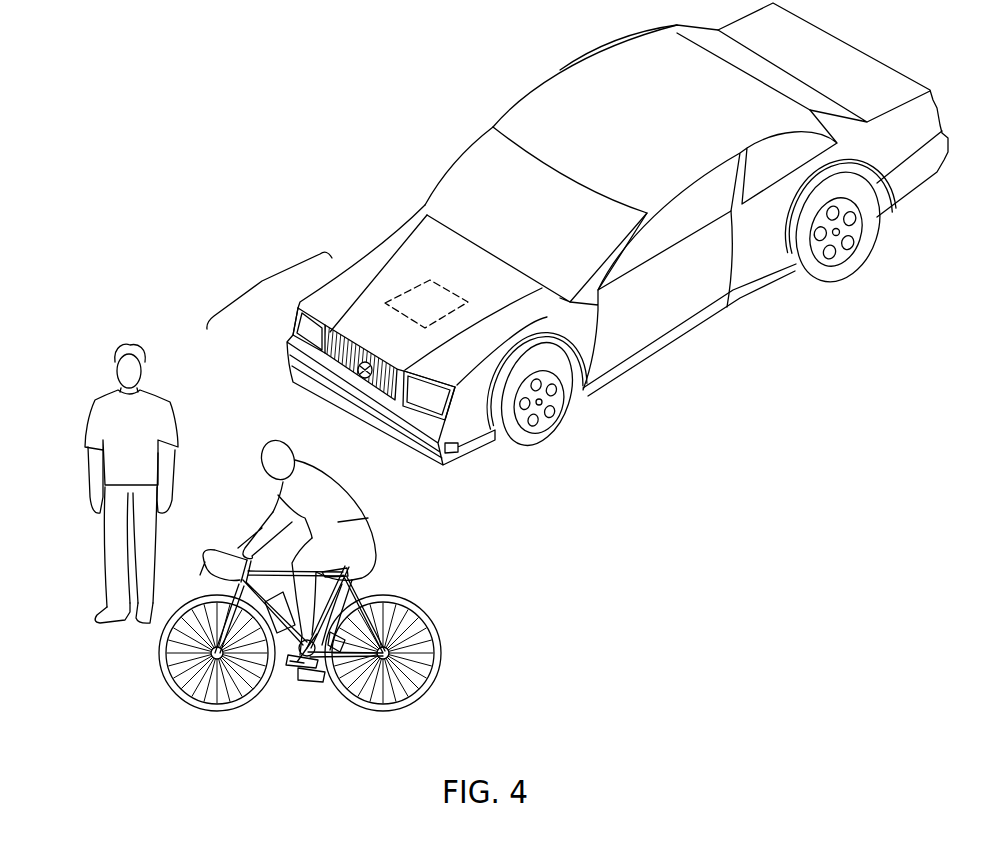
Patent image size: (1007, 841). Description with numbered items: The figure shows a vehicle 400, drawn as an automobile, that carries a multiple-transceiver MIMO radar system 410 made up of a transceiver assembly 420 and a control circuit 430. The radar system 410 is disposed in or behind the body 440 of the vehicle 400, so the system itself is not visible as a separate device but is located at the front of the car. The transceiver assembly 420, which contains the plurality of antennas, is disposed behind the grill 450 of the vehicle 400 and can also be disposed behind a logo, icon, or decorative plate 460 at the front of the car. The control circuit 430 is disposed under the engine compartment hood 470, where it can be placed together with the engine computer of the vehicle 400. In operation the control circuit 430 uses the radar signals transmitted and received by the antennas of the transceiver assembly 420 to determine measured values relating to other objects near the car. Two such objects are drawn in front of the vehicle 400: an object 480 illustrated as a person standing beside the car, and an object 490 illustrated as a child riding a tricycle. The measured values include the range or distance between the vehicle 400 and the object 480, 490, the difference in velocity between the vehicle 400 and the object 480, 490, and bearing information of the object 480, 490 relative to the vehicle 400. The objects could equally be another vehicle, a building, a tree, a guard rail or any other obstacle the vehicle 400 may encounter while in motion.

The vehicle 400 is at (347, 93).
The multiple-transceiver MIMO radar system 410 is at (262, 280).
The transceiver assembly 420 is at (357, 374).
The control circuit 430 is at (435, 300).
The body 440 is at (583, 60).
The grill 450 is at (385, 390).
The logo, icon, or decorative plate 460 is at (330, 361).
The engine compartment hood 470 is at (383, 255).
The object 480 is at (96, 375).
The object 490 is at (390, 510).